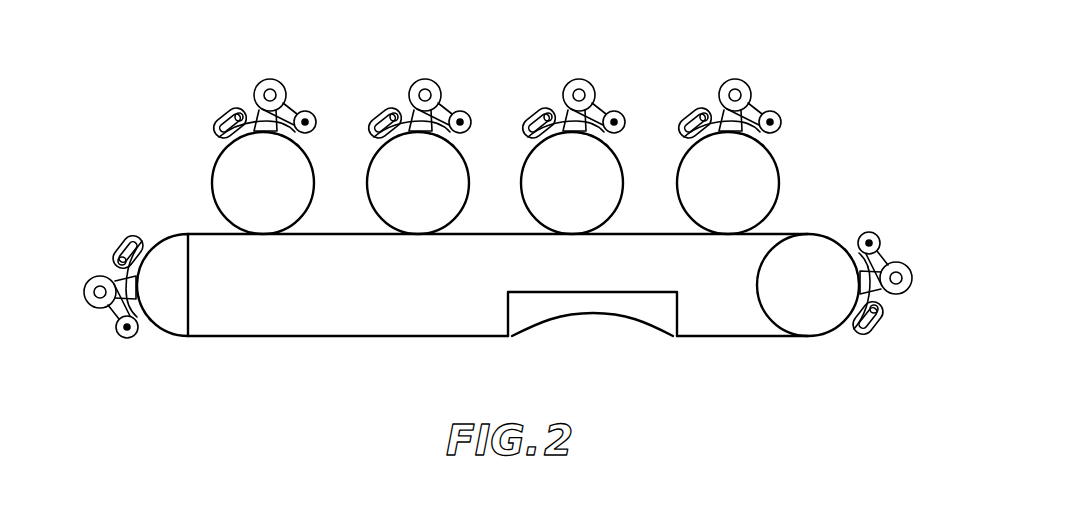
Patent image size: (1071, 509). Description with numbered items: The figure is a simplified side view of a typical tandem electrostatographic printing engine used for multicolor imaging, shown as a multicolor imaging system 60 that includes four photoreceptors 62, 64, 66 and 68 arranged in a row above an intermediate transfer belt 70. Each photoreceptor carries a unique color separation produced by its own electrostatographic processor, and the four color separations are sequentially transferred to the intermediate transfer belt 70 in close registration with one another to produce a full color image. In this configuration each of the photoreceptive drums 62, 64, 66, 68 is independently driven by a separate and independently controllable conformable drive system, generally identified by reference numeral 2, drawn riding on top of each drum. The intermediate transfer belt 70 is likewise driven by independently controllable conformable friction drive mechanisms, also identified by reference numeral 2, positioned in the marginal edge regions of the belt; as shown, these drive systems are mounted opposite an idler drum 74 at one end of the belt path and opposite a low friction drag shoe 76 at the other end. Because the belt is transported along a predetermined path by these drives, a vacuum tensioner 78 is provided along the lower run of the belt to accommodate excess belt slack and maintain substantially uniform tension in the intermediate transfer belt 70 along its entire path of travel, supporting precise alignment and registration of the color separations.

The conformable drive system 2 is at (262, 54).
The multicolor imaging system 60 is at (836, 159).
The photoreceptor 62 is at (211, 183).
The photoreceptor 64 is at (366, 183).
The photoreceptor 66 is at (520, 183).
The photoreceptor 68 is at (676, 184).
The intermediate transfer belt 70 is at (355, 337).
The idler drum 74 is at (828, 325).
The low friction drag shoe 76 is at (168, 317).
The vacuum tensioner 78 is at (508, 297).